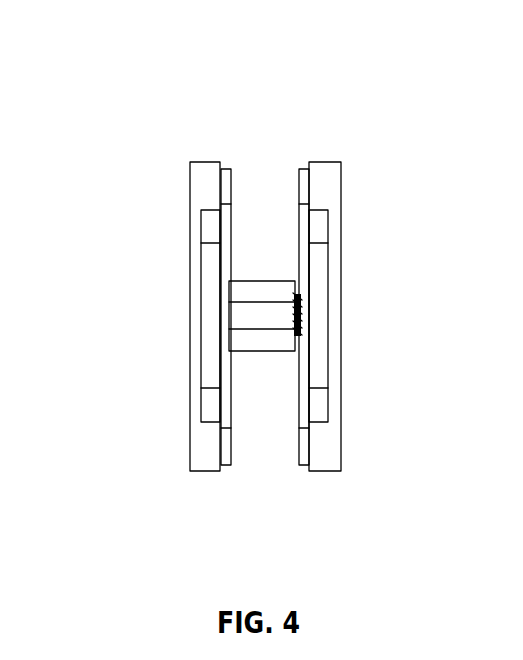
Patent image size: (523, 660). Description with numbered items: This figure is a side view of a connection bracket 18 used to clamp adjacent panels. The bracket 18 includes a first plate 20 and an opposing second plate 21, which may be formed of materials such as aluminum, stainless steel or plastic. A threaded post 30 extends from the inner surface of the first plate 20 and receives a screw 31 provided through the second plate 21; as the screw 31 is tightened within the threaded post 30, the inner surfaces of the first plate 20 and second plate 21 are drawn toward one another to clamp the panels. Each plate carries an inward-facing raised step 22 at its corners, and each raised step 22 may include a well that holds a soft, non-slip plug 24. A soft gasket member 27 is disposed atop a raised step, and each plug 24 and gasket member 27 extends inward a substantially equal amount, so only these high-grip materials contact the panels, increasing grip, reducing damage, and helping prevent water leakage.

The bracket 18 is at (132, 127).
The first plate 20 is at (193, 272).
The second plate 21 is at (333, 369).
The raised step 22 is at (211, 187).
The plug 24 is at (232, 180).
The gasket member 27 is at (225, 257).
The threaded post 30 is at (258, 295).
The screw 31 is at (299, 336).